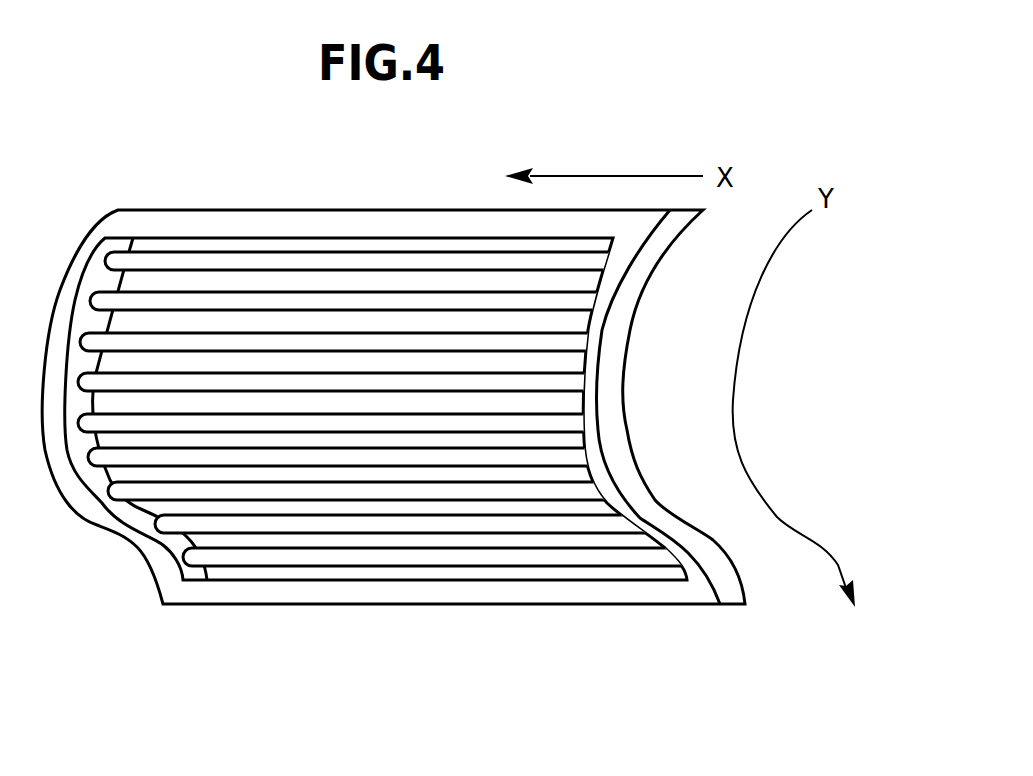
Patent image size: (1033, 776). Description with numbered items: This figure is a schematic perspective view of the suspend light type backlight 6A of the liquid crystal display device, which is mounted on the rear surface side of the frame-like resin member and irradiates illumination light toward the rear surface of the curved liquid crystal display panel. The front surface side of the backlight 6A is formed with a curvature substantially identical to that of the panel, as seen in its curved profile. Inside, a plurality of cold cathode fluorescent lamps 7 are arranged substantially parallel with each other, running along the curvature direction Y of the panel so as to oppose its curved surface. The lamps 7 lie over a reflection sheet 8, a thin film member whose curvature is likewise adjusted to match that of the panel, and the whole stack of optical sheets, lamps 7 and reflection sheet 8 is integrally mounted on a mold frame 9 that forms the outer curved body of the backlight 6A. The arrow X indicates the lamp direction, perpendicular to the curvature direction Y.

The suspend light type backlight 6A is at (218, 211).
The fluorescent lamps 7 is at (342, 560).
The reflection sheet 8 is at (455, 245).
The mold frame 9 is at (615, 352).